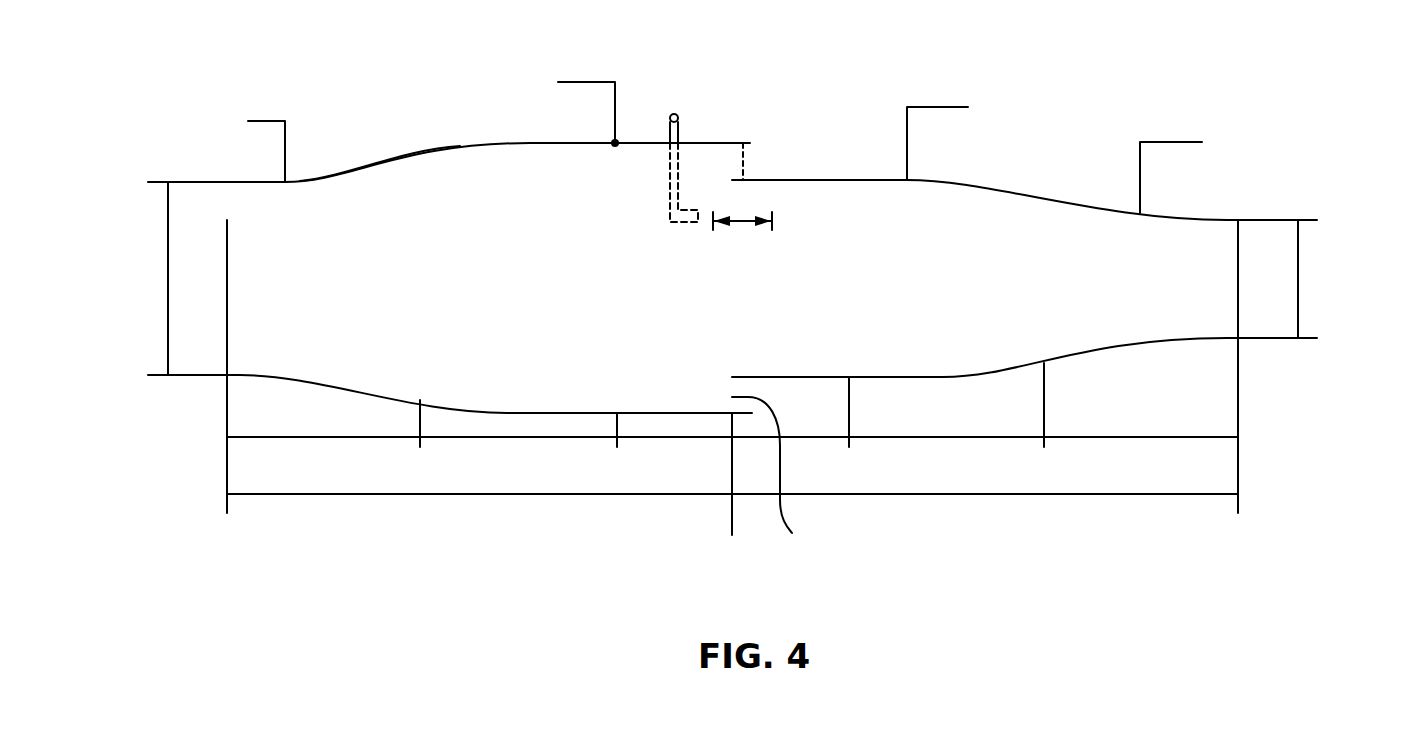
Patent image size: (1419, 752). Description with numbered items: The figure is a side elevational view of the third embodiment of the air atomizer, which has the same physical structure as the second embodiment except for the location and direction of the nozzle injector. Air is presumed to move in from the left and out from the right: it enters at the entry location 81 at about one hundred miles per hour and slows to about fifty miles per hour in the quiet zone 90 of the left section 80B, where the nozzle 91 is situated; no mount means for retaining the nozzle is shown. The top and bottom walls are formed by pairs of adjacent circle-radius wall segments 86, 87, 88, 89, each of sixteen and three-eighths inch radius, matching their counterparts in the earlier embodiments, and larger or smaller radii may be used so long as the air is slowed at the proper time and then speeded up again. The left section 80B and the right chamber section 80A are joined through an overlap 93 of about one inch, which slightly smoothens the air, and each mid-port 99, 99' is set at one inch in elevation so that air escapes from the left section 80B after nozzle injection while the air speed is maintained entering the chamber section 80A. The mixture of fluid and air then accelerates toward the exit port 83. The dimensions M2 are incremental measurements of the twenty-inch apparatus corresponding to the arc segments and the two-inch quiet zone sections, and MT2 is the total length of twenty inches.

The right chamber section 80A is at (1024, 313).
The left section 80B is at (450, 339).
The entry location 81 is at (227, 279).
The exit port 83 is at (1240, 280).
The wall radius segment 86 is at (188, 103).
The wall radius segment 87 is at (338, 140).
The wall radius segment 88 is at (1025, 87).
The wall radius segment 89 is at (1260, 120).
The quiet zone 90 is at (634, 143).
The nozzle 91 is at (636, 197).
The overlap 93 is at (745, 224).
The mid-port 99 is at (783, 124).
The mid-port 99' is at (778, 481).
The incremental measurement M2 is at (200, 437).
The total length measurement MT2 is at (200, 494).